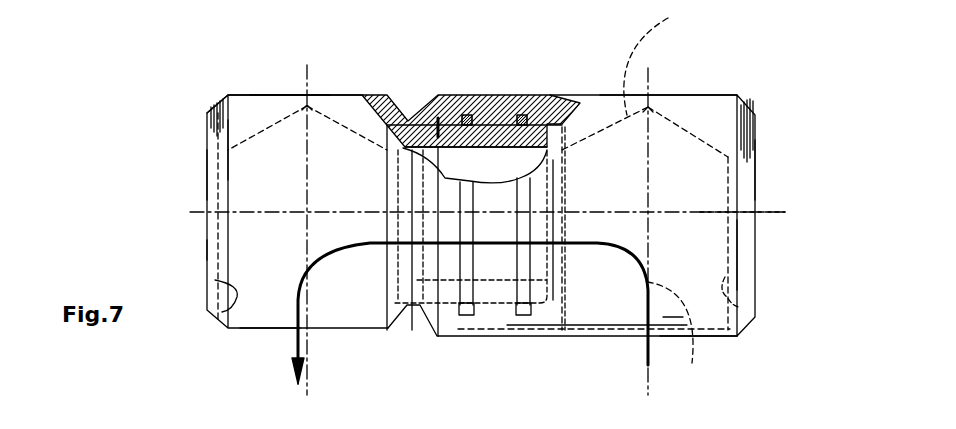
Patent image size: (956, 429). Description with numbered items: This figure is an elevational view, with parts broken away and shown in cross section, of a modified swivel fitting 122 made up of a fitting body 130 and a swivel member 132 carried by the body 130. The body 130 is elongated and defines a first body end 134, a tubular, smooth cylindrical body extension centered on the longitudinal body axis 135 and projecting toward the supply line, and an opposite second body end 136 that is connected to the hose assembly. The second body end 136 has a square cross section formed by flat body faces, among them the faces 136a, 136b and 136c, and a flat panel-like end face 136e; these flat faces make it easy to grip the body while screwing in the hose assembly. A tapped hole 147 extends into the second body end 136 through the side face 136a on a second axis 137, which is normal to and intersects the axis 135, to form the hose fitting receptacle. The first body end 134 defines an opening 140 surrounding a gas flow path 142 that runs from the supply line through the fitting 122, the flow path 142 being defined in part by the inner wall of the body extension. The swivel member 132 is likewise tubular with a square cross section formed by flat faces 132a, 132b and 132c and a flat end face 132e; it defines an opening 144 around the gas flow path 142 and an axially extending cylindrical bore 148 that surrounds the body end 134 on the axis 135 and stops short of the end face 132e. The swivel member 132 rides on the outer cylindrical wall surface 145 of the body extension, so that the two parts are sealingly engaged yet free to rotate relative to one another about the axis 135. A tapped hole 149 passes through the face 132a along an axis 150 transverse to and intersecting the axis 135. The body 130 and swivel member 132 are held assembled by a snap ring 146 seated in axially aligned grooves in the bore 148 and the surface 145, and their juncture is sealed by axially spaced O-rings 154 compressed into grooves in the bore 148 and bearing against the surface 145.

The swivel fitting 122 is at (228, 55).
The fitting body 130 is at (270, 134).
The swivel member 132 is at (665, 75).
The swivel member body face 132a is at (720, 340).
The swivel member body face 132b is at (690, 255).
The swivel member body face 132c is at (703, 96).
The swivel member end face 132e is at (755, 148).
The first body end 134 is at (512, 162).
The longitudinal body axis 135 is at (780, 213).
The second body end 136 is at (260, 297).
The body side face 136a is at (267, 330).
The body face 136b is at (247, 167).
The body face 136c is at (287, 94).
The body end face 136e is at (207, 178).
The second axis 137 is at (313, 387).
The opening 140 is at (548, 115).
The gas flow path 142 is at (327, 280).
The opening 144 is at (562, 157).
The outer cylindrical body extension wall surface 145 is at (478, 94).
The snap ring 146 is at (422, 120).
The tapped hole 147 is at (212, 317).
The cylindrical bore 148 is at (668, 18).
The tapped hole 149 is at (733, 300).
The axis 150 is at (692, 363).
The O-rings 154 is at (442, 148).